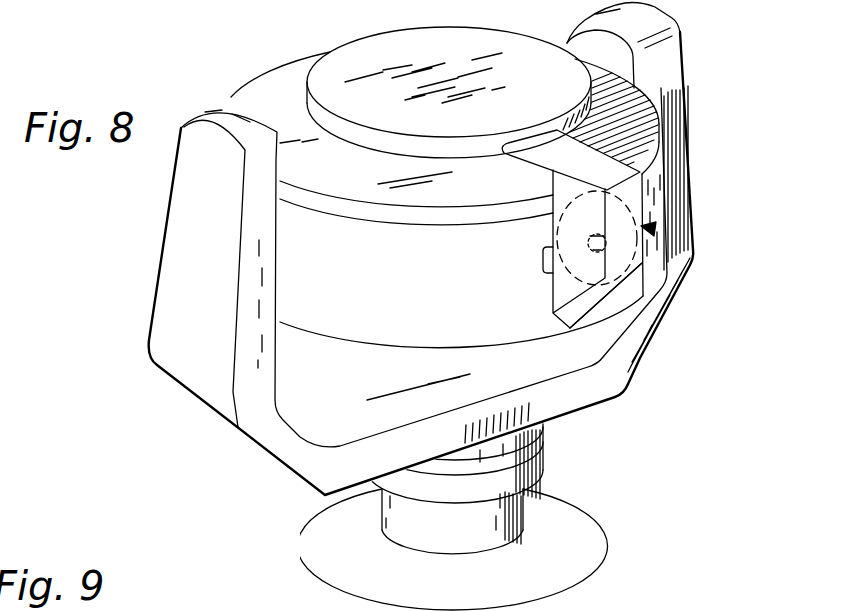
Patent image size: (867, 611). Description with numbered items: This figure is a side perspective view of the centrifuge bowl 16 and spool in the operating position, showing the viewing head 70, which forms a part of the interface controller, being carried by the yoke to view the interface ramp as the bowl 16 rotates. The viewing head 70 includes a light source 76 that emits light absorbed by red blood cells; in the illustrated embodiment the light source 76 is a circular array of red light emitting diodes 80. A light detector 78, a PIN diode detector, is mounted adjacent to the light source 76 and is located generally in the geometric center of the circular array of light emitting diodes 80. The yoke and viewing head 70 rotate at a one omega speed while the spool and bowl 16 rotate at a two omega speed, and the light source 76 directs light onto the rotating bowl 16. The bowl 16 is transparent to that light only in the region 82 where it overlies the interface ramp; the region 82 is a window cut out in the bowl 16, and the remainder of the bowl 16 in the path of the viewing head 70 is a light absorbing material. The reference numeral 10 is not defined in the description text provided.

The mounting bracket 10 is at (168, 292).
The bowl 16 is at (363, 298).
The viewing head 70 is at (630, 207).
The light source 76 is at (585, 240).
The light detector 78 is at (567, 277).
The light emitting diodes 80 is at (655, 263).
The region 82 is at (543, 258).